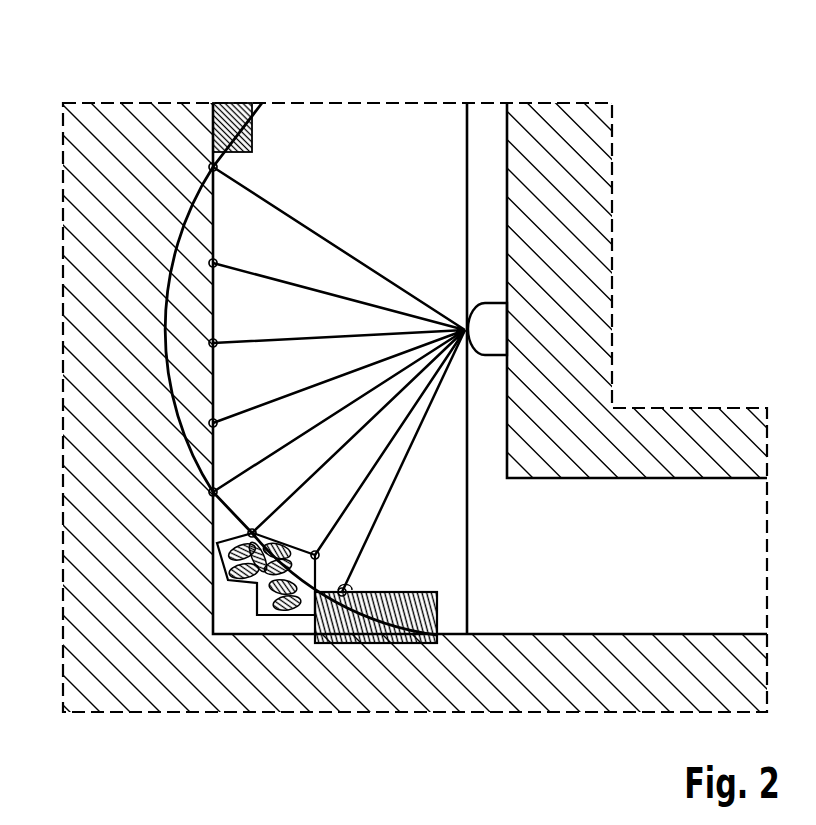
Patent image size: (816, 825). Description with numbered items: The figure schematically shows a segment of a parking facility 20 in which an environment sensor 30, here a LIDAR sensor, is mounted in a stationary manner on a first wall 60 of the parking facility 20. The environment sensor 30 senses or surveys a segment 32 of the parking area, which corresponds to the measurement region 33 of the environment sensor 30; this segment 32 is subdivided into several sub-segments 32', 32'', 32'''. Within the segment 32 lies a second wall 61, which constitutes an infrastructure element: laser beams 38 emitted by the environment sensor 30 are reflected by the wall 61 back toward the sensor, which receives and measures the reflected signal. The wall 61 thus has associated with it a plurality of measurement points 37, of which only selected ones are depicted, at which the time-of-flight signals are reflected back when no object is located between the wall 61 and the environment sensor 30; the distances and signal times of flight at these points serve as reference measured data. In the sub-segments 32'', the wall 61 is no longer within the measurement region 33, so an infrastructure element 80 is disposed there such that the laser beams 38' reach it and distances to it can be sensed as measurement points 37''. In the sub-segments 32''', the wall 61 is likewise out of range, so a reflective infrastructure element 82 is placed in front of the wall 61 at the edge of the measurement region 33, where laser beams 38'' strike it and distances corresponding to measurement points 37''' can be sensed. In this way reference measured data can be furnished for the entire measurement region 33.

The parking facility 20 is at (411, 96).
The environment sensor 30 is at (495, 328).
The segment 32 is at (503, 434).
The sub-segment 32' is at (483, 381).
The sub-segment 32'' is at (487, 485).
The sub-segment 32''' is at (399, 408).
The measurement region 33 is at (256, 103).
The measurement points 37 is at (116, 323).
The measurement points 37'' is at (166, 640).
The measurement points 37''' is at (362, 674).
The laser beams 38 is at (339, 316).
The laser beams 38' is at (357, 442).
The laser beams 38'' is at (403, 461).
The first wall 60 is at (507, 217).
The second wall 61 is at (216, 573).
The infrastructure element 80 is at (278, 615).
The reflective infrastructure element 82 is at (213, 133).